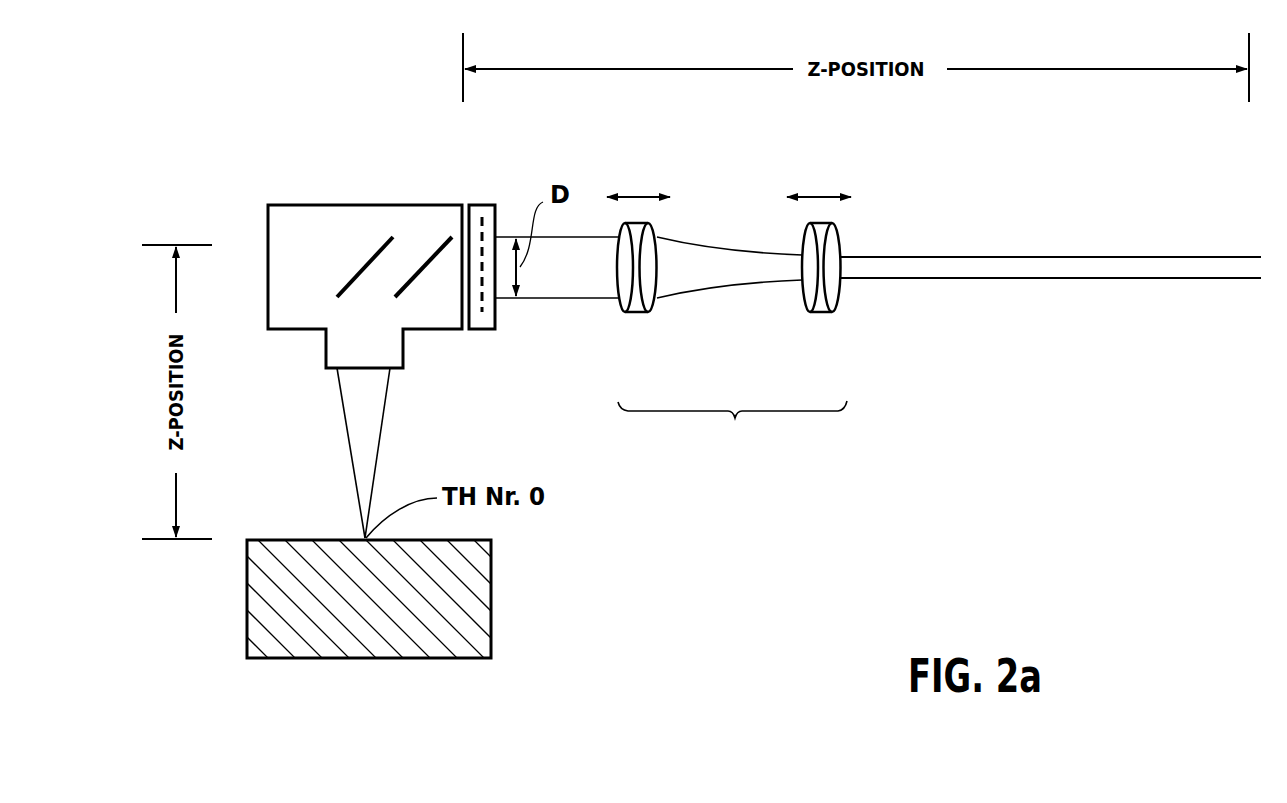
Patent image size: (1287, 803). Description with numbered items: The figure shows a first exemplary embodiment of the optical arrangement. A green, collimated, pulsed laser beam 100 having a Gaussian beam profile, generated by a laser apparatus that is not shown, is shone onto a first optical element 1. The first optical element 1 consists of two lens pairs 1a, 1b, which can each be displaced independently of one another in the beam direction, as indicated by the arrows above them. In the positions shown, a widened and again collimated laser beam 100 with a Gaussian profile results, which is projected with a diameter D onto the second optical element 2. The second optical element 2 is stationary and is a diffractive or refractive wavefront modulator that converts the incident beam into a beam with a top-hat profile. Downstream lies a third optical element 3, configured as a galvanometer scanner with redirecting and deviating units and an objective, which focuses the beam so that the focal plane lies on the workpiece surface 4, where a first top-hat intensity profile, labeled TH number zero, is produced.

The first optical element 1 is at (732, 429).
The lens pair 1a is at (815, 312).
The lens pair 1b is at (635, 312).
The second optical element 2 is at (482, 330).
The third optical element 3 is at (427, 217).
The workpiece surface 4 is at (403, 643).
The laser beam 100 is at (1108, 265).